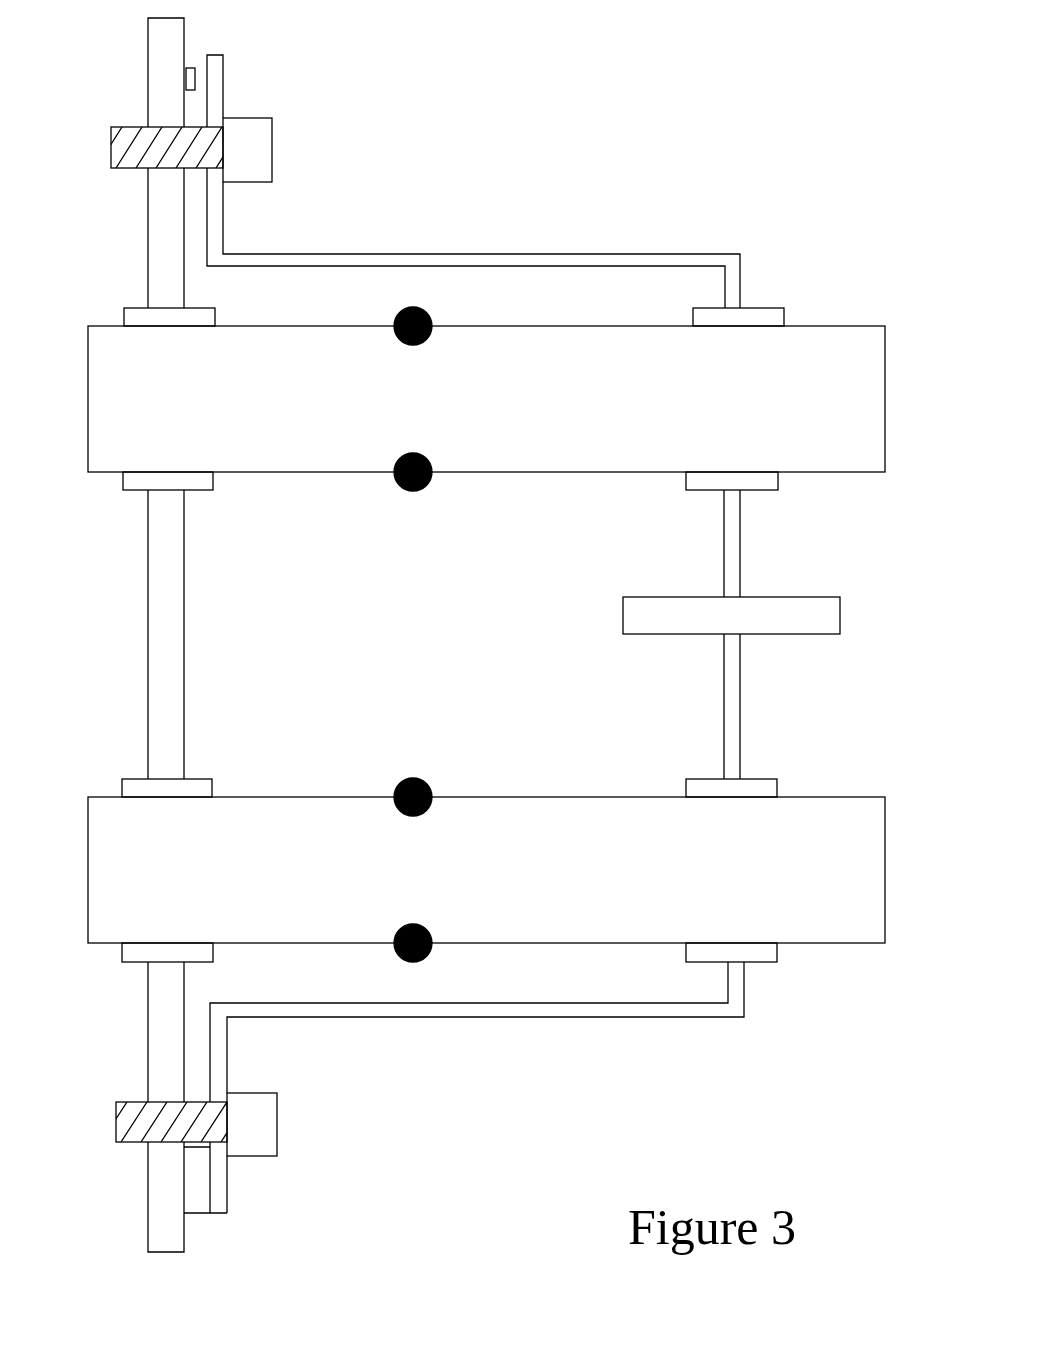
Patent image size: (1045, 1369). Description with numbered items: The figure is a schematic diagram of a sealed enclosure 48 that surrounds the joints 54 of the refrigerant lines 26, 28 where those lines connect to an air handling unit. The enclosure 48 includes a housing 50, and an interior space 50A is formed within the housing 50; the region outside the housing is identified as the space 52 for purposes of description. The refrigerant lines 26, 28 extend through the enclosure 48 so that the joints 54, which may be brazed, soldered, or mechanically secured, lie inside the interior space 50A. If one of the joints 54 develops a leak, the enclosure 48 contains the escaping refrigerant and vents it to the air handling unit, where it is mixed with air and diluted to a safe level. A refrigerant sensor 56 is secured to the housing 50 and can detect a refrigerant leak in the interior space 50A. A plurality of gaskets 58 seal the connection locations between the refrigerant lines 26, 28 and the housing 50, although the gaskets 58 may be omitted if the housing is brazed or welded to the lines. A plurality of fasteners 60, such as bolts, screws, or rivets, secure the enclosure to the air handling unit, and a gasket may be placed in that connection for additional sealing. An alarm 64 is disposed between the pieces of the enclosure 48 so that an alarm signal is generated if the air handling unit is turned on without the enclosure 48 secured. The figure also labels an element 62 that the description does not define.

The refrigerant line 26 is at (885, 398).
The refrigerant line 28 is at (885, 870).
The enclosure 48 is at (797, 186).
The housing 50 is at (148, 52).
The interior space 50A is at (430, 653).
The space outside the housing 52 is at (727, 85).
The joint 54 is at (413, 491).
The refrigerant sensor 56 is at (840, 617).
The gasket 58 is at (124, 316).
The fastener 60 is at (272, 145).
The end cap 62 is at (195, 1213).
The alarm 64 is at (190, 67).